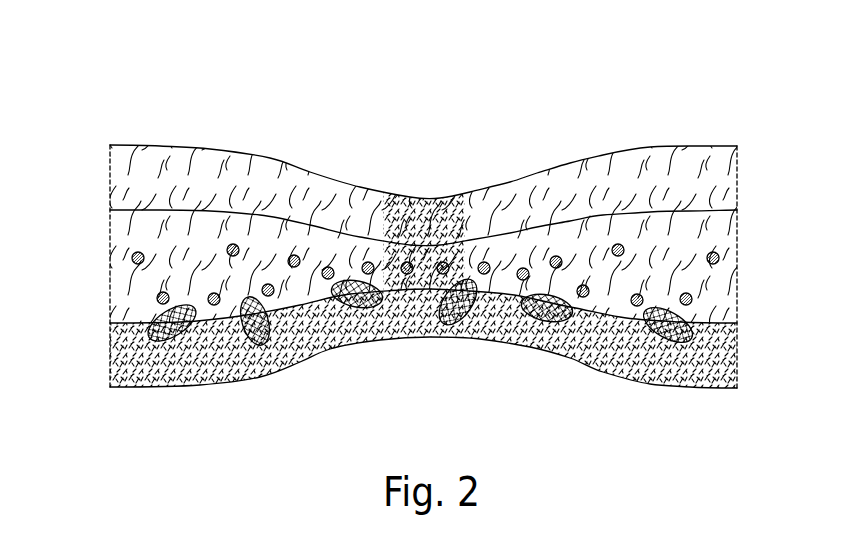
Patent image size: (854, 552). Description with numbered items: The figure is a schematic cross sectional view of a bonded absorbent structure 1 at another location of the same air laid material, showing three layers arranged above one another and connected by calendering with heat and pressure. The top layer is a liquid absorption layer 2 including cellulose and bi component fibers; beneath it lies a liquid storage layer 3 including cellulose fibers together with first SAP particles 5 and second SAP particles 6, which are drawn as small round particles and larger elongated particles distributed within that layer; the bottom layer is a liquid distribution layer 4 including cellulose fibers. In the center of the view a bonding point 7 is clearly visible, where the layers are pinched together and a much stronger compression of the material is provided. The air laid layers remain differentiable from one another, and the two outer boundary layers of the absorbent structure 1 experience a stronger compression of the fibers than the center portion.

The absorbent structure 1 is at (609, 103).
The liquid absorption layer 2 is at (737, 167).
The liquid storage layer 3 is at (737, 275).
The liquid distribution layer 4 is at (737, 358).
The first SAP particles 5 is at (131, 258).
The second SAP particles 6 is at (146, 328).
The bonding point 7 is at (433, 190).